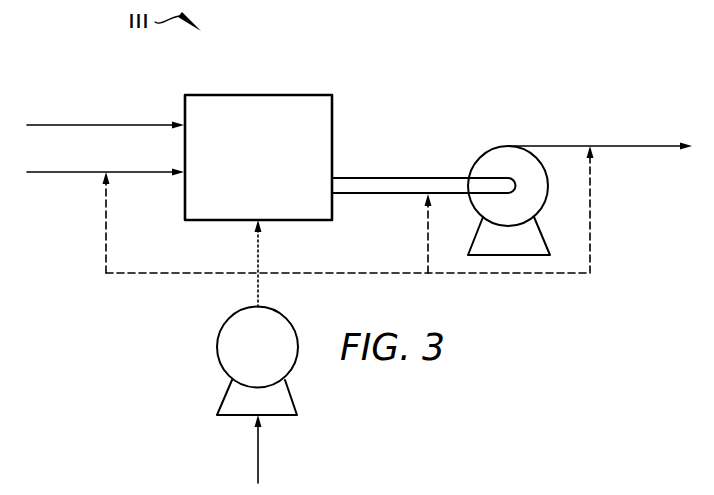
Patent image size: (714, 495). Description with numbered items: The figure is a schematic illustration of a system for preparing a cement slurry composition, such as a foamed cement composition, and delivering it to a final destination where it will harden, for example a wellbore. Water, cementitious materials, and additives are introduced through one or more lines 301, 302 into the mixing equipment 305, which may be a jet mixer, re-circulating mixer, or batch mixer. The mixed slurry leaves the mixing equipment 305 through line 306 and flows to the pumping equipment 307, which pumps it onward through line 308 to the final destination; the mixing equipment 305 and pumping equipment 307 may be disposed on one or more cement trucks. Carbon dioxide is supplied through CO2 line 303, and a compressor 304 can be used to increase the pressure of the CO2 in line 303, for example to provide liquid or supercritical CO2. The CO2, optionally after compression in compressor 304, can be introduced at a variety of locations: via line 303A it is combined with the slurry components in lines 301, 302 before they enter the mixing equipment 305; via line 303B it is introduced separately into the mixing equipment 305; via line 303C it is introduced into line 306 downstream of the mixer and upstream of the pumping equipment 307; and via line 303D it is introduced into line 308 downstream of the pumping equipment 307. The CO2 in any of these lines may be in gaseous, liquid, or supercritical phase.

The line 301 is at (71, 174).
The line 302 is at (90, 123).
The CO2 line 303 is at (260, 448).
The line 303A is at (150, 272).
The line 303B is at (261, 251).
The line 303C is at (427, 232).
The line 303D is at (592, 222).
The compressor 304 is at (273, 358).
The mixing equipment 305 is at (273, 168).
The line 306 is at (388, 176).
The pumping equipment 307 is at (494, 150).
The line 308 is at (607, 144).